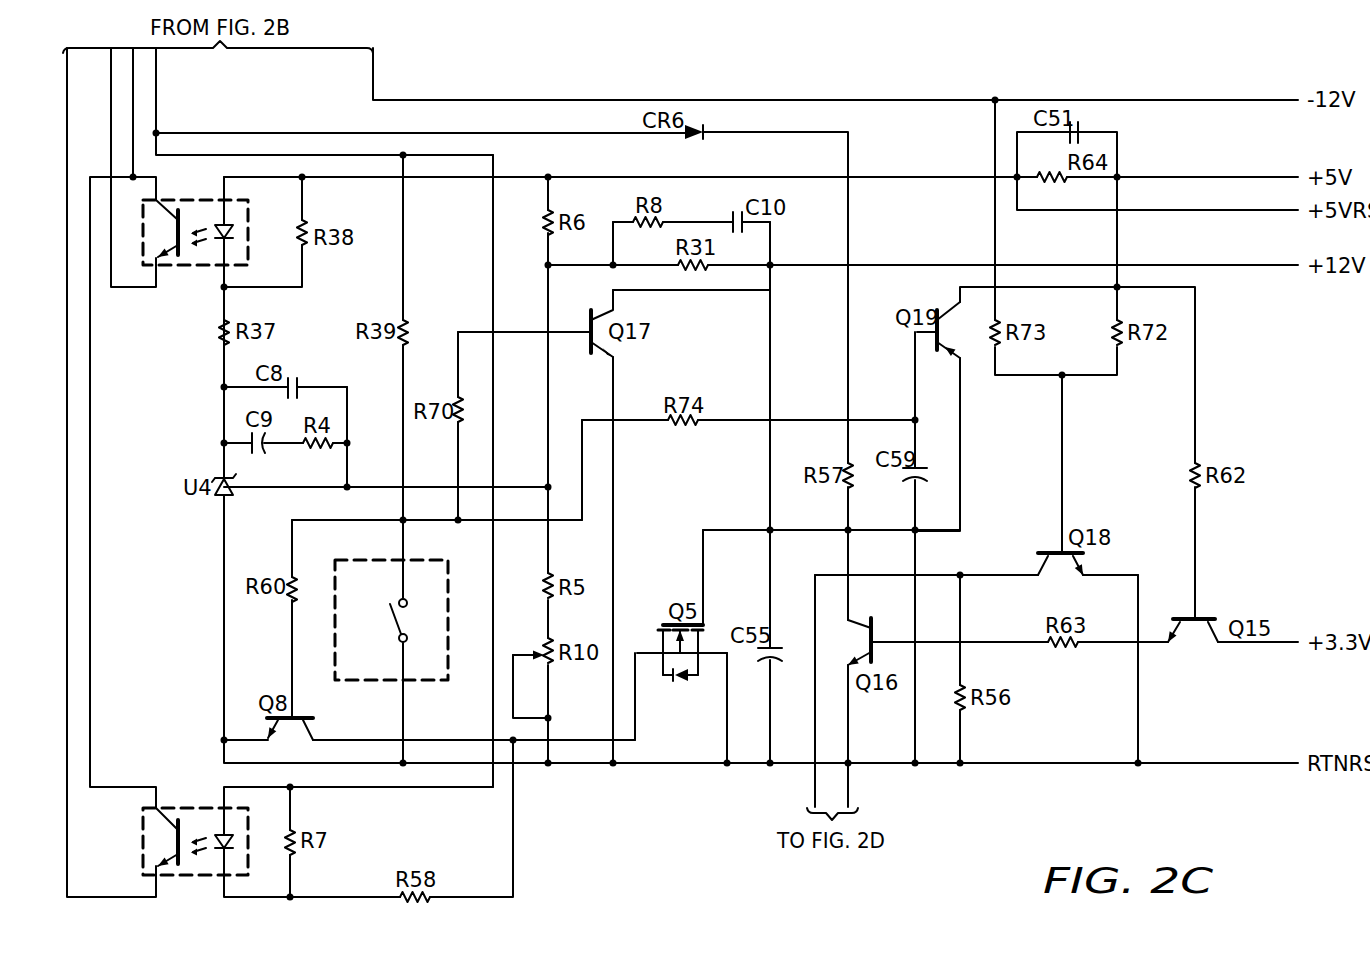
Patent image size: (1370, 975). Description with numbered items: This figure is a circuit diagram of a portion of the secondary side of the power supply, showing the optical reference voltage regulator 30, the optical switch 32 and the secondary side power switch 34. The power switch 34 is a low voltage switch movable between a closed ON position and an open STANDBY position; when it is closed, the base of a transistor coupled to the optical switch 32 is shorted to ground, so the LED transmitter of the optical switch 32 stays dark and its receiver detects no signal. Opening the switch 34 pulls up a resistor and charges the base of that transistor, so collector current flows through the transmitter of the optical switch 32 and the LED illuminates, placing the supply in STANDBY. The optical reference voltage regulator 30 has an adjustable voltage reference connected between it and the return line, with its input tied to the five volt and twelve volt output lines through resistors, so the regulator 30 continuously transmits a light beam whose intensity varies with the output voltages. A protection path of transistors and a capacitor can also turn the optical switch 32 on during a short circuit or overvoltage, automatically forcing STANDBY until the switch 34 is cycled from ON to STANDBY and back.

The optical reference voltage regulator 30 is at (196, 268).
The optical switch 32 is at (198, 806).
The secondary side power switch 34 is at (421, 682).